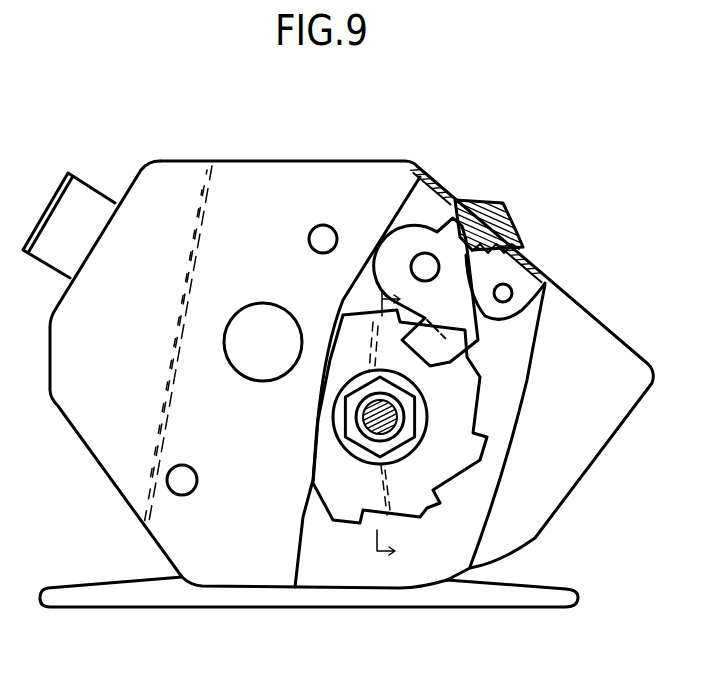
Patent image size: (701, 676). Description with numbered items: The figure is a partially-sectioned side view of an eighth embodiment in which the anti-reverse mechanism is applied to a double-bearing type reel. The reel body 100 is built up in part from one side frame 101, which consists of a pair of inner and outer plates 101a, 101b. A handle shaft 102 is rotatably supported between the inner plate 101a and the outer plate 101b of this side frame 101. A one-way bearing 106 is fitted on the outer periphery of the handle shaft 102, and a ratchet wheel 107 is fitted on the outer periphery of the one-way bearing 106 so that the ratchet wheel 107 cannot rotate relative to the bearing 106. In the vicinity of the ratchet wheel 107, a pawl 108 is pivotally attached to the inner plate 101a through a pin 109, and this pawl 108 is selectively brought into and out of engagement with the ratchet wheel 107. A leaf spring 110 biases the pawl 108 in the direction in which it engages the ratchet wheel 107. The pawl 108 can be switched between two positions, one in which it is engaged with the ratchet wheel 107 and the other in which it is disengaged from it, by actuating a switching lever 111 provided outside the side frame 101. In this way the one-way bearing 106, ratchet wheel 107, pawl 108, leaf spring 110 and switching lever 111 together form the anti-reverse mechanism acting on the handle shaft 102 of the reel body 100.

The reel body 100 is at (190, 157).
The side frame 101 is at (274, 162).
The inner plate 101a is at (330, 567).
The outer plate 101b is at (110, 470).
The handle shaft 102 is at (362, 437).
The one-way bearing 106 is at (347, 415).
The ratchet wheel 107 is at (430, 513).
The pawl 108 is at (520, 238).
The pin 109 is at (422, 253).
The leaf spring 110 is at (546, 286).
The switching lever 111 is at (476, 198).